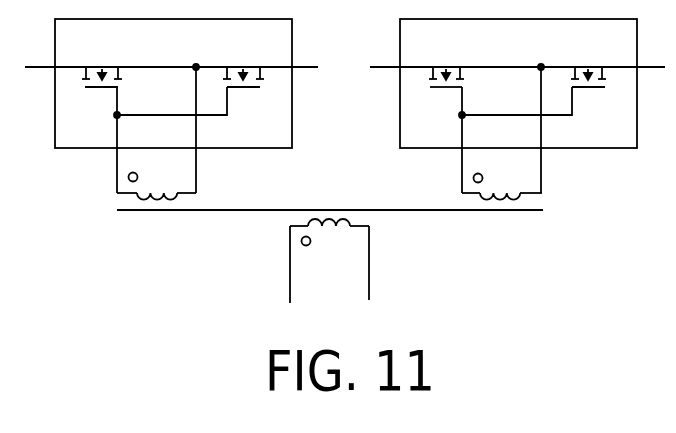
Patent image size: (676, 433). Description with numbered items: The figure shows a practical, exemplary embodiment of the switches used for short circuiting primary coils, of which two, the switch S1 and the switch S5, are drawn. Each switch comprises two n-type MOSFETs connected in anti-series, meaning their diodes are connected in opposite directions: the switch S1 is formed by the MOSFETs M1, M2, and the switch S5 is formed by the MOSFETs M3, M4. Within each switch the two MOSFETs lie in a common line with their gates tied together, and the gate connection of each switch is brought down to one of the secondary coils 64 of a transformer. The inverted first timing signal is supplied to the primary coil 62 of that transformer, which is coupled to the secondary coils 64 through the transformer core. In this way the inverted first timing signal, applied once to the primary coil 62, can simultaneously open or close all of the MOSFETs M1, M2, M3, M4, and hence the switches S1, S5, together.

The primary coil 62 is at (370, 228).
The secondary coils 64 is at (117, 177).
The n-type MOSFET M1 is at (102, 113).
The n-type MOSFET M2 is at (190, 74).
The n-type MOSFET M3 is at (444, 113).
The n-type MOSFET M4 is at (534, 74).
The switch S1 is at (171, 106).
The switch S5 is at (517, 106).